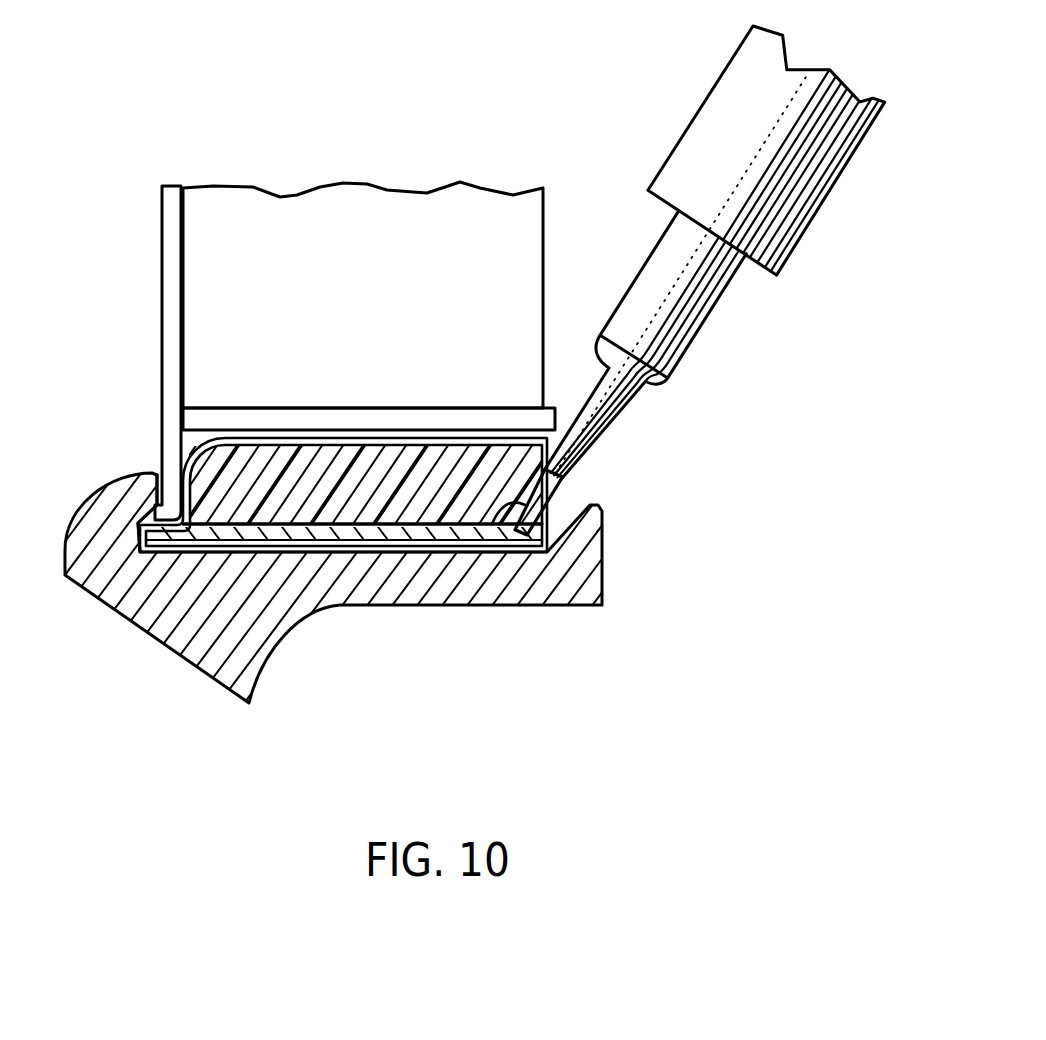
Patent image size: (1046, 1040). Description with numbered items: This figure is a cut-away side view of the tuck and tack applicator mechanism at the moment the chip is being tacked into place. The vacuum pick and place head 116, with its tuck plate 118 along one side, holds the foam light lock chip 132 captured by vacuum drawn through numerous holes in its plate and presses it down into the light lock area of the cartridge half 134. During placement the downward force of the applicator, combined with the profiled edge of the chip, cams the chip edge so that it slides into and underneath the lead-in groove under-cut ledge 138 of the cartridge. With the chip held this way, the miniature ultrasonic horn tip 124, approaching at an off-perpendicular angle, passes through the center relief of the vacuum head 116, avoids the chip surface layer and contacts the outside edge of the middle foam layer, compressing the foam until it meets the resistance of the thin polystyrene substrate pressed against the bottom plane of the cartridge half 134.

The vacuum pick and place head 116 is at (365, 215).
The tuck plate 118 is at (170, 305).
The ultrasonic horn tip 124 is at (712, 310).
The foam light lock chip 132 is at (372, 470).
The cartridge half 134 is at (603, 547).
The lead-in groove under-cut ledge 138 is at (160, 555).